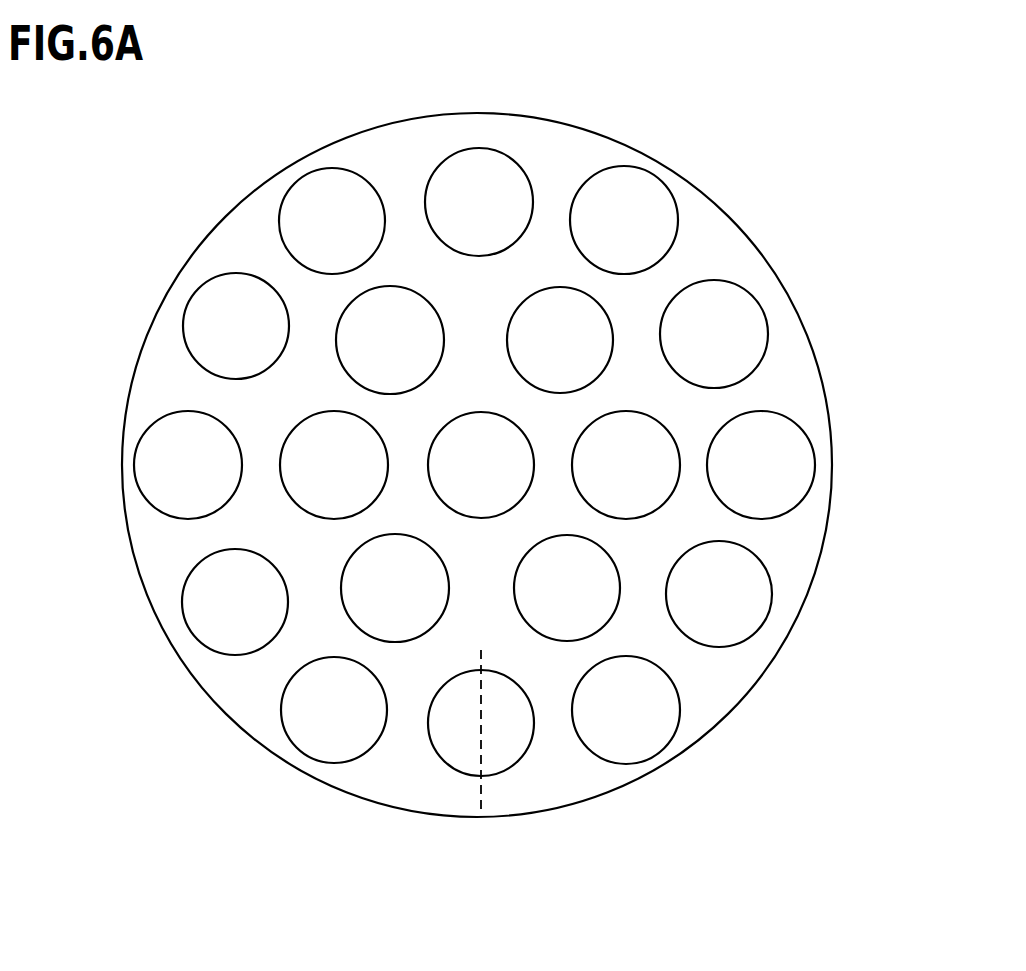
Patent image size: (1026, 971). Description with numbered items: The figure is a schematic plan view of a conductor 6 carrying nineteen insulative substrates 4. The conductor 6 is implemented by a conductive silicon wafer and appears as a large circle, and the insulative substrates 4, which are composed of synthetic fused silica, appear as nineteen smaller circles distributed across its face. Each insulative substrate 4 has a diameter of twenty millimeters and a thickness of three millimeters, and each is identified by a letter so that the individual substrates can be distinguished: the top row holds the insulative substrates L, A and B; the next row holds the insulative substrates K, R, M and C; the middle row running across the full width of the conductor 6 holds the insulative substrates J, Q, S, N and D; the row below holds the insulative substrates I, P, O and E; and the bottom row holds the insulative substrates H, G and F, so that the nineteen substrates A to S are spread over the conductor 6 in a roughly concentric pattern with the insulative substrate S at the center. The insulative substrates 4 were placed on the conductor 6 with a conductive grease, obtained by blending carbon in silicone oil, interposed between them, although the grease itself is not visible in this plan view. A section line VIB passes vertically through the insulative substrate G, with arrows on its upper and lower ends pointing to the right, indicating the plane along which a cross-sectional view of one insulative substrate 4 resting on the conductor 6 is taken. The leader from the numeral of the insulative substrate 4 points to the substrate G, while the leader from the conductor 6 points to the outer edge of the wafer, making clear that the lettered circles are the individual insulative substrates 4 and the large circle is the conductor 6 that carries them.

The conductor 6 is at (832, 452).
The insulative substrate 4 is at (525, 752).
The section line VIB- VIB is at (528, 650).
The insulative substrate A is at (479, 202).
The insulative substrate B is at (624, 220).
The insulative substrate C is at (714, 334).
The insulative substrate D is at (761, 465).
The insulative substrate E is at (719, 594).
The insulative substrate F is at (626, 710).
The insulative substrate H is at (334, 710).
The insulative substrate I is at (235, 602).
The insulative substrate J is at (188, 465).
The insulative substrate K is at (236, 326).
The insulative substrate L is at (332, 221).
The insulative substrate M is at (560, 340).
The insulative substrate N is at (626, 465).
The insulative substrate O is at (567, 588).
The insulative substrate P is at (395, 588).
The insulative substrate Q is at (334, 465).
The insulative substrate R is at (390, 340).
The insulative substrate S is at (481, 465).